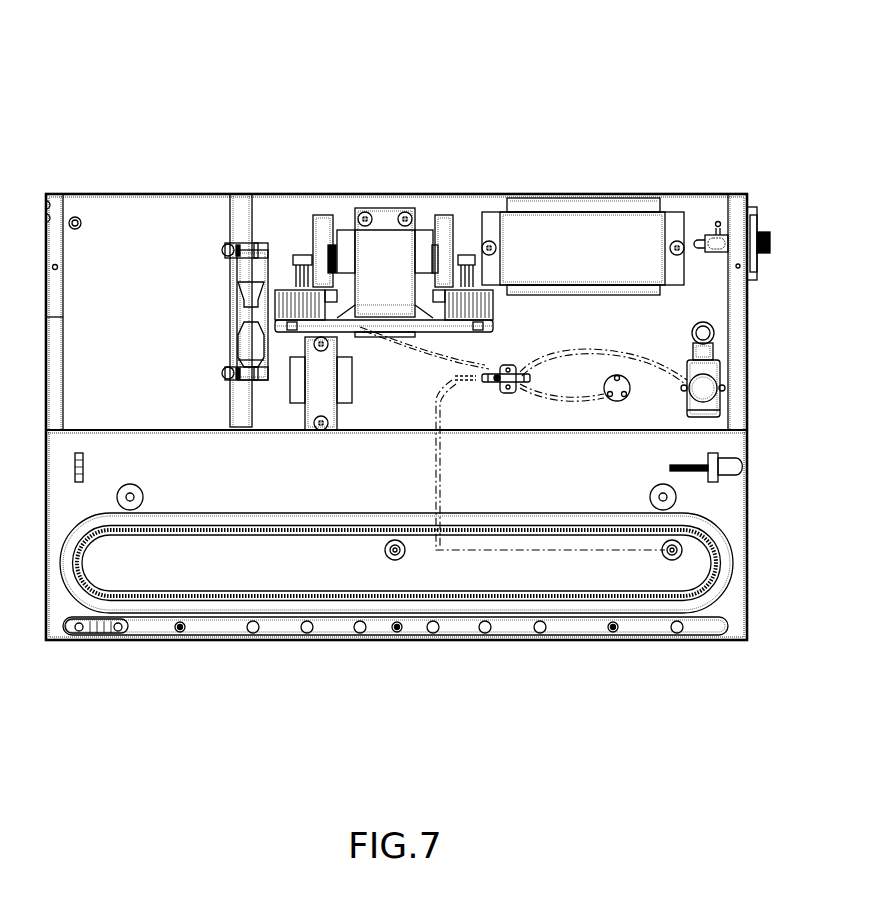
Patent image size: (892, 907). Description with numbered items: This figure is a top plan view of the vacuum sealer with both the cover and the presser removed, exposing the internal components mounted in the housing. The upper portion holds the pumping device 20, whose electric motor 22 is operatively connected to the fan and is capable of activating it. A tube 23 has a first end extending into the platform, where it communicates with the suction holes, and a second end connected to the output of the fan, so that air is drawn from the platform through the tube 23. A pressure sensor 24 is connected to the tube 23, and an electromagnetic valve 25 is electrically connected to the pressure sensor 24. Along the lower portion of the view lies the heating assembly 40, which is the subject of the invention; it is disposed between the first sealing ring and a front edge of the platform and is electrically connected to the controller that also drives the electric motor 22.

The pumping device 20 is at (308, 130).
The electric motor 22 is at (635, 242).
The tube 23 is at (417, 347).
The pressure sensor 24 is at (608, 375).
The electromagnetic valve 25 is at (705, 385).
The heating assembly 40 is at (278, 660).